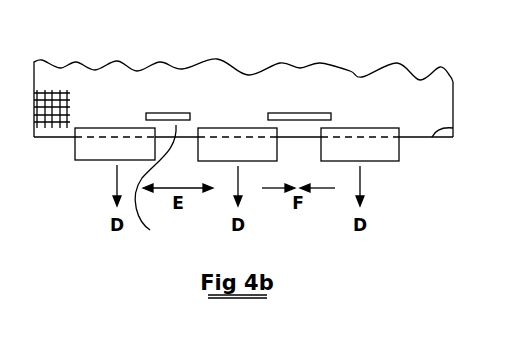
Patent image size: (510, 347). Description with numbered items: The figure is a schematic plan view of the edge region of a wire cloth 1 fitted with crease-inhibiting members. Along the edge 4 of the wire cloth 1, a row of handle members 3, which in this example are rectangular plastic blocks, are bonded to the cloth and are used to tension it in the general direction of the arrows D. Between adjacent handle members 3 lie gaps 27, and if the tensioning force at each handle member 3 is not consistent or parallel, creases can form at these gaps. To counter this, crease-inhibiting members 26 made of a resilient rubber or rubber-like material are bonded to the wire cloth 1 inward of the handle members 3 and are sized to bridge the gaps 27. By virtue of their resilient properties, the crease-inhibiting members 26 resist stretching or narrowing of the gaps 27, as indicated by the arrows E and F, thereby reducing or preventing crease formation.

The wire cloth 1 is at (382, 84).
The handle member 3 is at (87, 147).
The edge 4 is at (453, 128).
The crease-inhibiting member 26 is at (179, 113).
The gap 27 is at (155, 183).